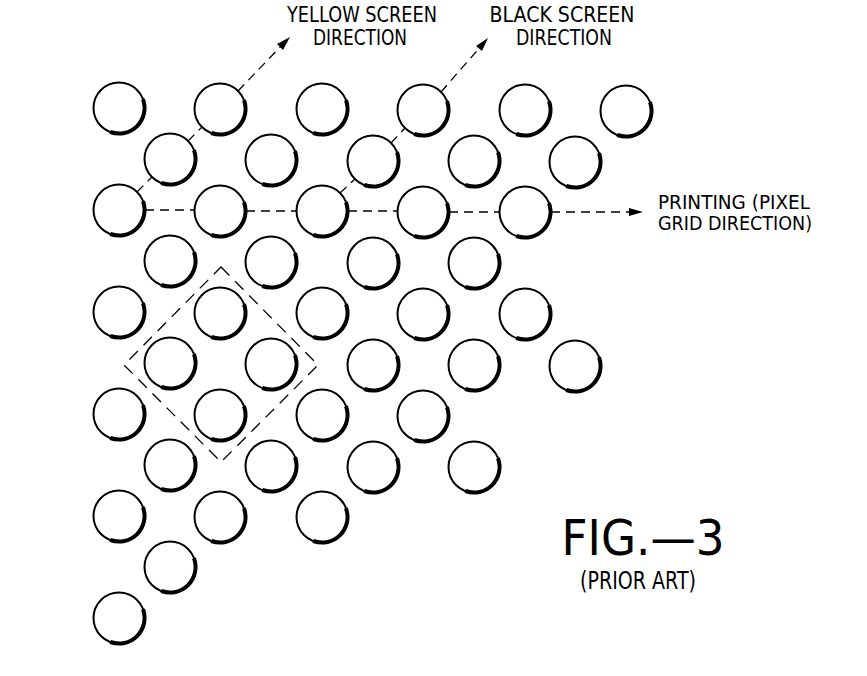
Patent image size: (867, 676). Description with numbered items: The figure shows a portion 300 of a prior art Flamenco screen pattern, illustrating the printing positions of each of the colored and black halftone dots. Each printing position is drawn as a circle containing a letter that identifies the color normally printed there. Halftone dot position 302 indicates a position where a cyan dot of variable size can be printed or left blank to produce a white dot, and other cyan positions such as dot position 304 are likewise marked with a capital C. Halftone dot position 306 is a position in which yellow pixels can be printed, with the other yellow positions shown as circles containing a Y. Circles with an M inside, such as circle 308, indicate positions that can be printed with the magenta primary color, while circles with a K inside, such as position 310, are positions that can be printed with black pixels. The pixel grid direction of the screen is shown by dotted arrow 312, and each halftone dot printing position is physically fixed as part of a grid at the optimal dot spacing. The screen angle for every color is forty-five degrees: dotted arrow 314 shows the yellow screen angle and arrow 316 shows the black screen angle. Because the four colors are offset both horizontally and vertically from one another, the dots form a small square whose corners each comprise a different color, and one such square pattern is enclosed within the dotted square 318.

The portion of prior art Flamenco screen pattern 300 is at (688, 80).
The cyan halftone dot position 302 is at (117, 81).
The cyan halftone dot position 304 is at (93, 312).
The yellow halftone dot position 306 is at (93, 210).
The magenta halftone dot position 308 is at (492, 383).
The black halftone dot position 310 is at (601, 367).
The pixel grid direction arrow 312 is at (598, 216).
The yellow screen angle arrow 314 is at (247, 78).
The black screen angle arrow 316 is at (467, 63).
The dotted square 318 is at (125, 364).